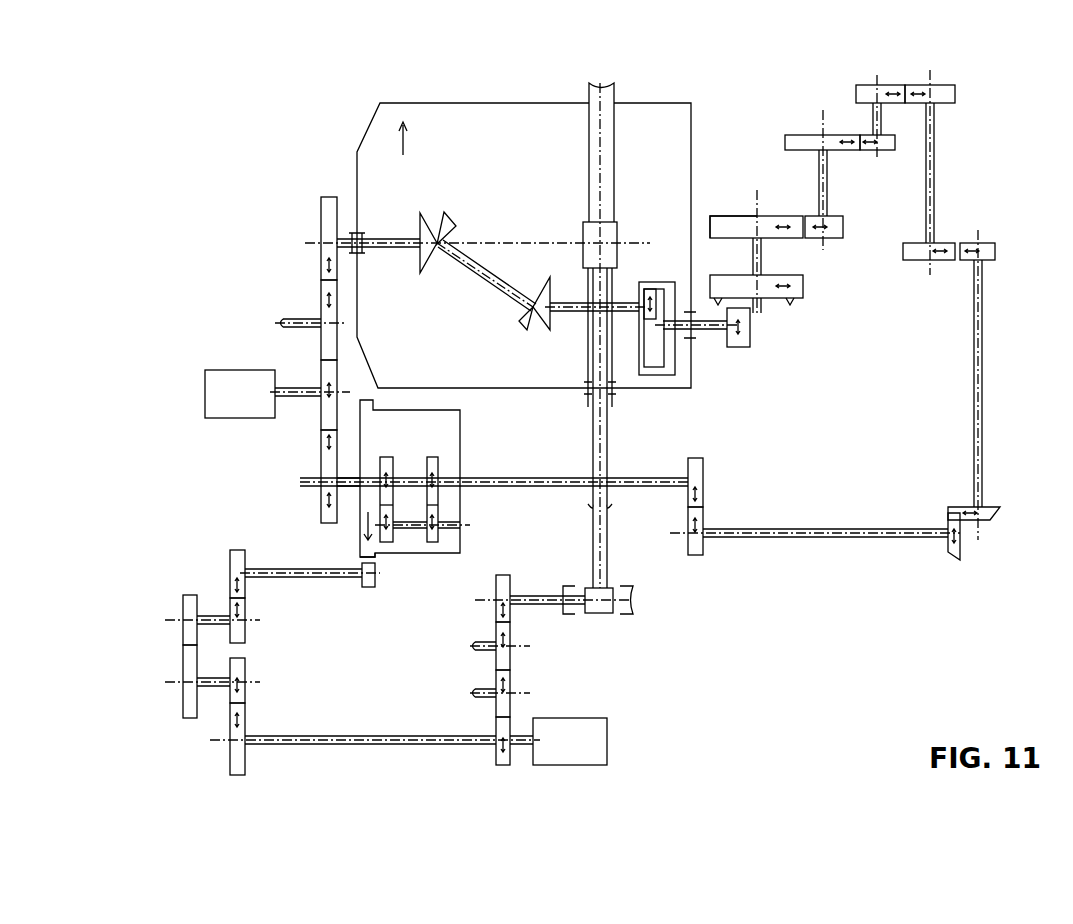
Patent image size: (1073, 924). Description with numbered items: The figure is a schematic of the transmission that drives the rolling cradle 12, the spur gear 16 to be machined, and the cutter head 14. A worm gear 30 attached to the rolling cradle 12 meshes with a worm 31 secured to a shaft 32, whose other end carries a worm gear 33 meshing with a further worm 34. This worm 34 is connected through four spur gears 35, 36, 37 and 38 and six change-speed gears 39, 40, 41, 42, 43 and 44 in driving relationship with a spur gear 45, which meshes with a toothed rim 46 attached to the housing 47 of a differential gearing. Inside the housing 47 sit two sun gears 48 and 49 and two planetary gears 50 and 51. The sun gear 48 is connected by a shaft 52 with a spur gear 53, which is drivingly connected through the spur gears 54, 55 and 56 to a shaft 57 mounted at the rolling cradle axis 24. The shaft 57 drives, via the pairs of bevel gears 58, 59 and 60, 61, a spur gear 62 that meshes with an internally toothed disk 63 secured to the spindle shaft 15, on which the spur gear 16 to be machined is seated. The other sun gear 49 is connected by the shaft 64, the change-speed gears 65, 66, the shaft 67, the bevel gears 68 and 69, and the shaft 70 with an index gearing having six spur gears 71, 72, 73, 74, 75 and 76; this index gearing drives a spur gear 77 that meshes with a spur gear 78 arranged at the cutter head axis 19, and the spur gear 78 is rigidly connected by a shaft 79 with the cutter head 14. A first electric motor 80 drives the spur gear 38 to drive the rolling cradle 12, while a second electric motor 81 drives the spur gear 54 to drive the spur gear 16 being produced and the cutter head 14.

The rolling cradle 12 is at (372, 134).
The cutter head 14 is at (800, 297).
The spindle shaft 15 is at (710, 333).
The spur gear 16 is at (750, 330).
The cutter head axis 19 is at (757, 214).
The rolling cradle axis 24 is at (318, 243).
The worm gear 30 is at (612, 186).
The worm 31 is at (617, 232).
The shaft 32 is at (607, 540).
The worm gear 33 is at (622, 614).
The worm 34 is at (595, 613).
The spur gear 35 is at (510, 580).
The spur gear 36 is at (510, 650).
The spur gear 37 is at (510, 693).
The spur gear 38 is at (496, 730).
The change-speed gear 39 is at (230, 762).
The change-speed gear 40 is at (245, 668).
The change-speed gear 41 is at (183, 700).
The change-speed gear 42 is at (183, 612).
The change-speed gear 43 is at (245, 612).
The change-speed gear 44 is at (230, 562).
The spur gear 45 is at (366, 590).
The toothed rim 46 is at (378, 560).
The housing 47 is at (460, 428).
The sun gear 48 is at (385, 457).
The sun gear 49 is at (432, 457).
The planetary gear 50 is at (398, 542).
The planetary gear 51 is at (455, 528).
The shaft 52 is at (345, 495).
The spur gear 53 is at (321, 460).
The spur gear 54 is at (321, 370).
The spur gear 55 is at (321, 300).
The spur gear 56 is at (321, 215).
The shaft 57 is at (385, 250).
The bevel gear 58 is at (418, 222).
The bevel gear 59 is at (450, 220).
The bevel gear 60 is at (526, 330).
The bevel gear 61 is at (552, 330).
The spur gear 62 is at (650, 288).
The disk 63 is at (650, 376).
The shaft 64 is at (553, 478).
The change-speed gear 65 is at (703, 472).
The change-speed gear 66 is at (700, 556).
The shaft 67 is at (812, 540).
The bevel gear 68 is at (952, 562).
The bevel gear 69 is at (995, 518).
The shaft 70 is at (982, 390).
The spur gear 71 is at (995, 251).
The spur gear 72 is at (912, 262).
The spur gear 73 is at (955, 94).
The spur gear 74 is at (856, 94).
The spur gear 75 is at (885, 152).
The spur gear 76 is at (795, 135).
The spur gear 77 is at (843, 236).
The spur gear 78 is at (782, 216).
The shaft 79 is at (765, 262).
The first electric motor 80 is at (607, 742).
The second electric motor 81 is at (205, 393).